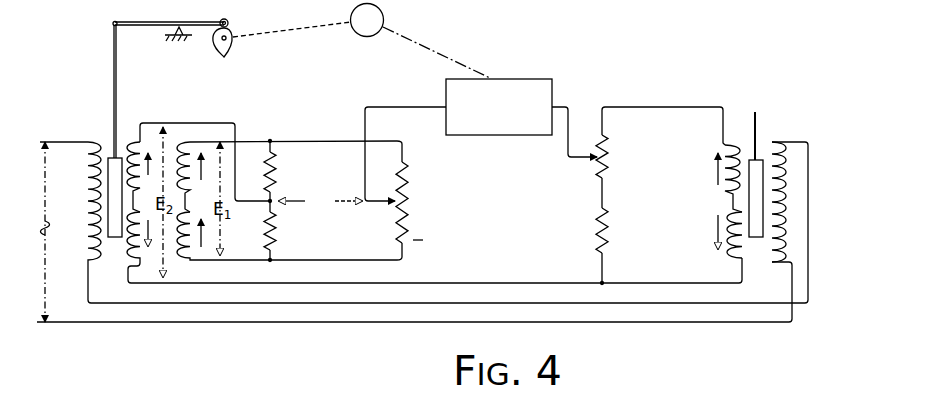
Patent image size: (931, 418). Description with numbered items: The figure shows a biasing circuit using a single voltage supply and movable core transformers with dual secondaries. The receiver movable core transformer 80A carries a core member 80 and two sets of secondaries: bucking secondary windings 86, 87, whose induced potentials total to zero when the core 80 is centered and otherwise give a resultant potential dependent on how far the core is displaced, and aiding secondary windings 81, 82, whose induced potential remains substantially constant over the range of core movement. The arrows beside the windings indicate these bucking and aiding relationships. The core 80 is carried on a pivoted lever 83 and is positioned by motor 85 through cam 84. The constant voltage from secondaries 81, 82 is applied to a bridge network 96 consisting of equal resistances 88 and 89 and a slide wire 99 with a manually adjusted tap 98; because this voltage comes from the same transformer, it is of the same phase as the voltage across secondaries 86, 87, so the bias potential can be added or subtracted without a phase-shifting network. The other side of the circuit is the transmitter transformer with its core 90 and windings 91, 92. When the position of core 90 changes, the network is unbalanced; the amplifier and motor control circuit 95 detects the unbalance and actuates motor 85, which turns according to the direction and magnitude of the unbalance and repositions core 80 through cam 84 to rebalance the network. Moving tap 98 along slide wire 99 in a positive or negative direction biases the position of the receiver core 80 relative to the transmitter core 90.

The core member 80 is at (111, 179).
The movable core transformer 80A is at (107, 136).
The secondary winding 81 is at (191, 143).
The secondary winding 82 is at (191, 259).
The lever 83 is at (128, 26).
The cam 84 is at (223, 58).
The motor 85 is at (366, 37).
The secondary winding 86 is at (139, 142).
The secondary winding 87 is at (134, 258).
The resistance 88 is at (275, 180).
The resistance 89 is at (275, 239).
The transmitter core 90 is at (757, 125).
The winding 91 is at (727, 214).
The winding 92 is at (727, 195).
The amplifier and motor control circuit 95 is at (474, 136).
The bridge network 96 is at (342, 255).
The adjustable tap 98 is at (373, 205).
The slide wire 99 is at (409, 233).